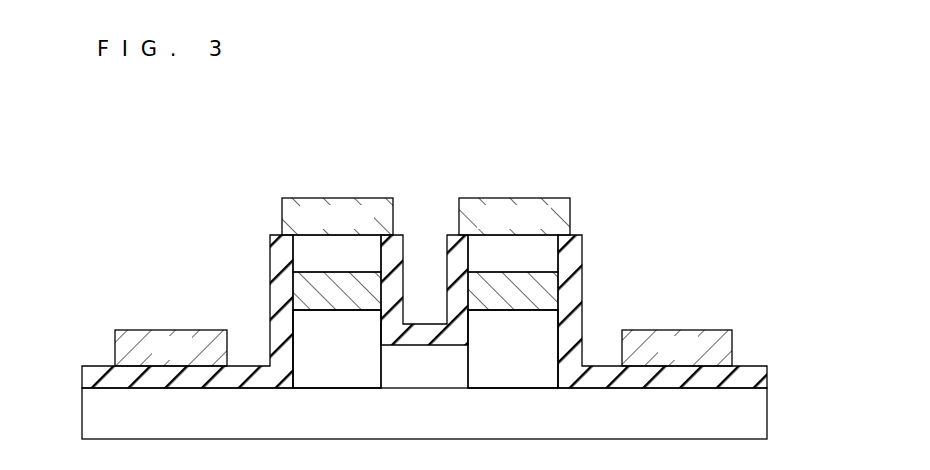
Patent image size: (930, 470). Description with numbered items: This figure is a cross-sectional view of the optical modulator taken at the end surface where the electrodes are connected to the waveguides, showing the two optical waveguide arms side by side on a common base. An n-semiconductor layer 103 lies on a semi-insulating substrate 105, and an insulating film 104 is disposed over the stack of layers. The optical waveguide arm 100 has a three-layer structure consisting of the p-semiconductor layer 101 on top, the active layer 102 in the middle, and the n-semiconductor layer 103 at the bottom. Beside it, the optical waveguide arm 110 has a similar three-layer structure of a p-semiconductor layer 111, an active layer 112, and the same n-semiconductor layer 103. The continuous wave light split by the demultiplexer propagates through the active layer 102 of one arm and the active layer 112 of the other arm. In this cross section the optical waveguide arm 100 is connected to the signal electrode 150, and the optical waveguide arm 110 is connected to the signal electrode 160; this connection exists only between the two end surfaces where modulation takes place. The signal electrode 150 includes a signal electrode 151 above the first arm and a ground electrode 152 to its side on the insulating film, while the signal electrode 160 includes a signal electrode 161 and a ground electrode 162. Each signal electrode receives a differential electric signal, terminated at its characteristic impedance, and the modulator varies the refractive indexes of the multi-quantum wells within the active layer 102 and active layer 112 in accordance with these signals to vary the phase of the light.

The optical waveguide arm 100 is at (270, 300).
The p-semiconductor layer 101 is at (297, 245).
The active layer 102 is at (296, 290).
The n-semiconductor layer 103 is at (295, 328).
The insulating film 104 is at (94, 376).
The semi-insulating substrate 105 is at (94, 411).
The optical waveguide arm 110 is at (580, 300).
The p-semiconductor layer 111 is at (556, 256).
The active layer 112 is at (556, 291).
The signal electrode 150 is at (238, 246).
The signal (Signal) electrode 151 is at (335, 198).
The ground (GND) electrode 152 is at (142, 328).
The signal electrode 160 is at (616, 246).
The signal (Signal) electrode 161 is at (517, 198).
The ground (GND) electrode 162 is at (712, 328).